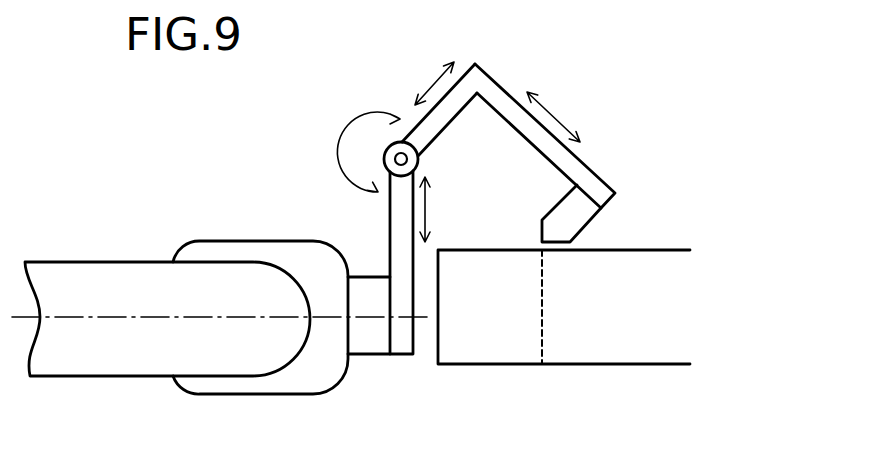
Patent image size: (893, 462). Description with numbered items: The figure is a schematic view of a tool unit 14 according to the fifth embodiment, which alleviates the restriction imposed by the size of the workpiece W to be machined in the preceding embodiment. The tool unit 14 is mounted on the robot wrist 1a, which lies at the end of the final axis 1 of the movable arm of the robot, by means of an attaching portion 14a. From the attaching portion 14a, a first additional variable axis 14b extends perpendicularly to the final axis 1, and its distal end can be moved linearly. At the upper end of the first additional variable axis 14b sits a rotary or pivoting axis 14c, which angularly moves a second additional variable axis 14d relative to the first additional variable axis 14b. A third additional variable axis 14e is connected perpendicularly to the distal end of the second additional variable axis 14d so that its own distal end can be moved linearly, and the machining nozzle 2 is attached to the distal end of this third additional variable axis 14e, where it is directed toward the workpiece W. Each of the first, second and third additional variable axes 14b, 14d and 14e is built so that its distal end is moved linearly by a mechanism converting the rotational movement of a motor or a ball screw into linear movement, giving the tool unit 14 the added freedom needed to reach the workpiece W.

The final axis 1 is at (138, 316).
The robot wrist 1a is at (277, 250).
The machining nozzle 2 is at (572, 218).
The tool unit 14 is at (487, 248).
The attaching portion 14a is at (368, 338).
The first additional variable axis 14b is at (396, 242).
The rotary or pivoting axis 14c is at (384, 152).
The second additional variable axis 14d is at (438, 121).
The third additional variable axis 14e is at (577, 162).
The workpiece W is at (600, 350).